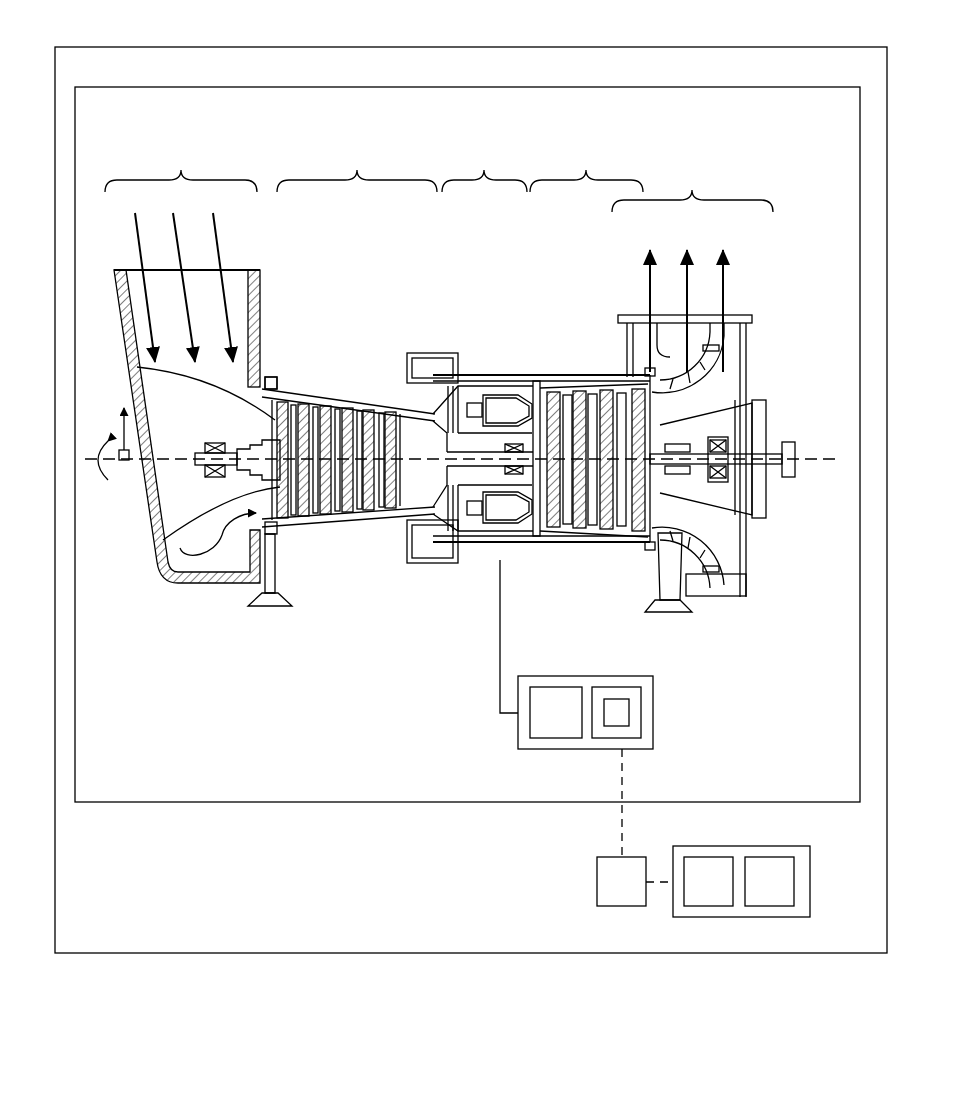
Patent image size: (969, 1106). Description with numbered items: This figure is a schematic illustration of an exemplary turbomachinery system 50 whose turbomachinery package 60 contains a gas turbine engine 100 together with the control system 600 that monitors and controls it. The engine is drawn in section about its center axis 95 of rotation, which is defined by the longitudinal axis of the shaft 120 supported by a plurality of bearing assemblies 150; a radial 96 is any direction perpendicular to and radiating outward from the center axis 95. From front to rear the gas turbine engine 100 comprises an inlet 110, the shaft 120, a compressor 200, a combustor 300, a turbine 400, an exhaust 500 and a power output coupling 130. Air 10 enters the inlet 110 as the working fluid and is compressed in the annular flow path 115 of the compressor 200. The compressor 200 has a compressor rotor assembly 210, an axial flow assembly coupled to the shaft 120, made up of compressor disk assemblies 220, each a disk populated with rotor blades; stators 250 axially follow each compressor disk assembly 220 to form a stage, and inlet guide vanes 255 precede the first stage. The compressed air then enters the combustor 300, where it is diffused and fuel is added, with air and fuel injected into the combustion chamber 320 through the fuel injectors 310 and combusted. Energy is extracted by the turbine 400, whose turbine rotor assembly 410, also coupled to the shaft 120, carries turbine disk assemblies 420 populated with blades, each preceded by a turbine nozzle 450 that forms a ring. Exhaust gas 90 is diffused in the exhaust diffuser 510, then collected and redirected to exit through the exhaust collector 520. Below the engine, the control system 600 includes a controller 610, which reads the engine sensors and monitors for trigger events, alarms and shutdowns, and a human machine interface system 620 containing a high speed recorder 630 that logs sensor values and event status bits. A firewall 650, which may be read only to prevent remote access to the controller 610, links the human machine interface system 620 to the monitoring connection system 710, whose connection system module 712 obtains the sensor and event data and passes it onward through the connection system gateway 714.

The air 10 is at (138, 243).
The turbomachinery system 50 is at (410, 47).
The turbomachinery package 60 is at (355, 803).
The exhaust gas 90 is at (648, 278).
The center axis 95 is at (166, 463).
The radial 96 is at (122, 428).
The gas turbine engine 100 is at (240, 130).
The inlet 110 is at (178, 366).
The annular flow path 115 is at (240, 395).
The shaft 120 is at (207, 447).
The power output coupling 130 is at (784, 442).
The bearing assemblies 150 is at (218, 476).
The compressor 200 is at (342, 394).
The compressor rotor assembly 210 is at (338, 521).
The compressor disk assemblies 220 is at (318, 520).
The compressor stationary vanes 250 is at (338, 402).
The inlet guide vanes 255 is at (275, 378).
The combustor 300 is at (535, 345).
The fuel injectors 310 is at (472, 366).
The combustion chamber 320 is at (506, 390).
The turbine 400 is at (592, 392).
The turbine rotor assembly 410 is at (596, 512).
The turbine disk assemblies 420 is at (622, 533).
The turbine nozzles 450 is at (620, 392).
The exhaust 500 is at (719, 390).
The exhaust diffuser 510 is at (657, 392).
The exhaust collector 520 is at (735, 348).
The control system 600 is at (610, 708).
The controller 610 is at (558, 687).
The human machine interface system 620 is at (612, 687).
The high speed recorder 630 is at (628, 708).
The firewall 650 is at (597, 896).
The monitoring connection system 710 is at (736, 881).
The connection system module 712 is at (708, 857).
The connection system gateway 714 is at (768, 857).